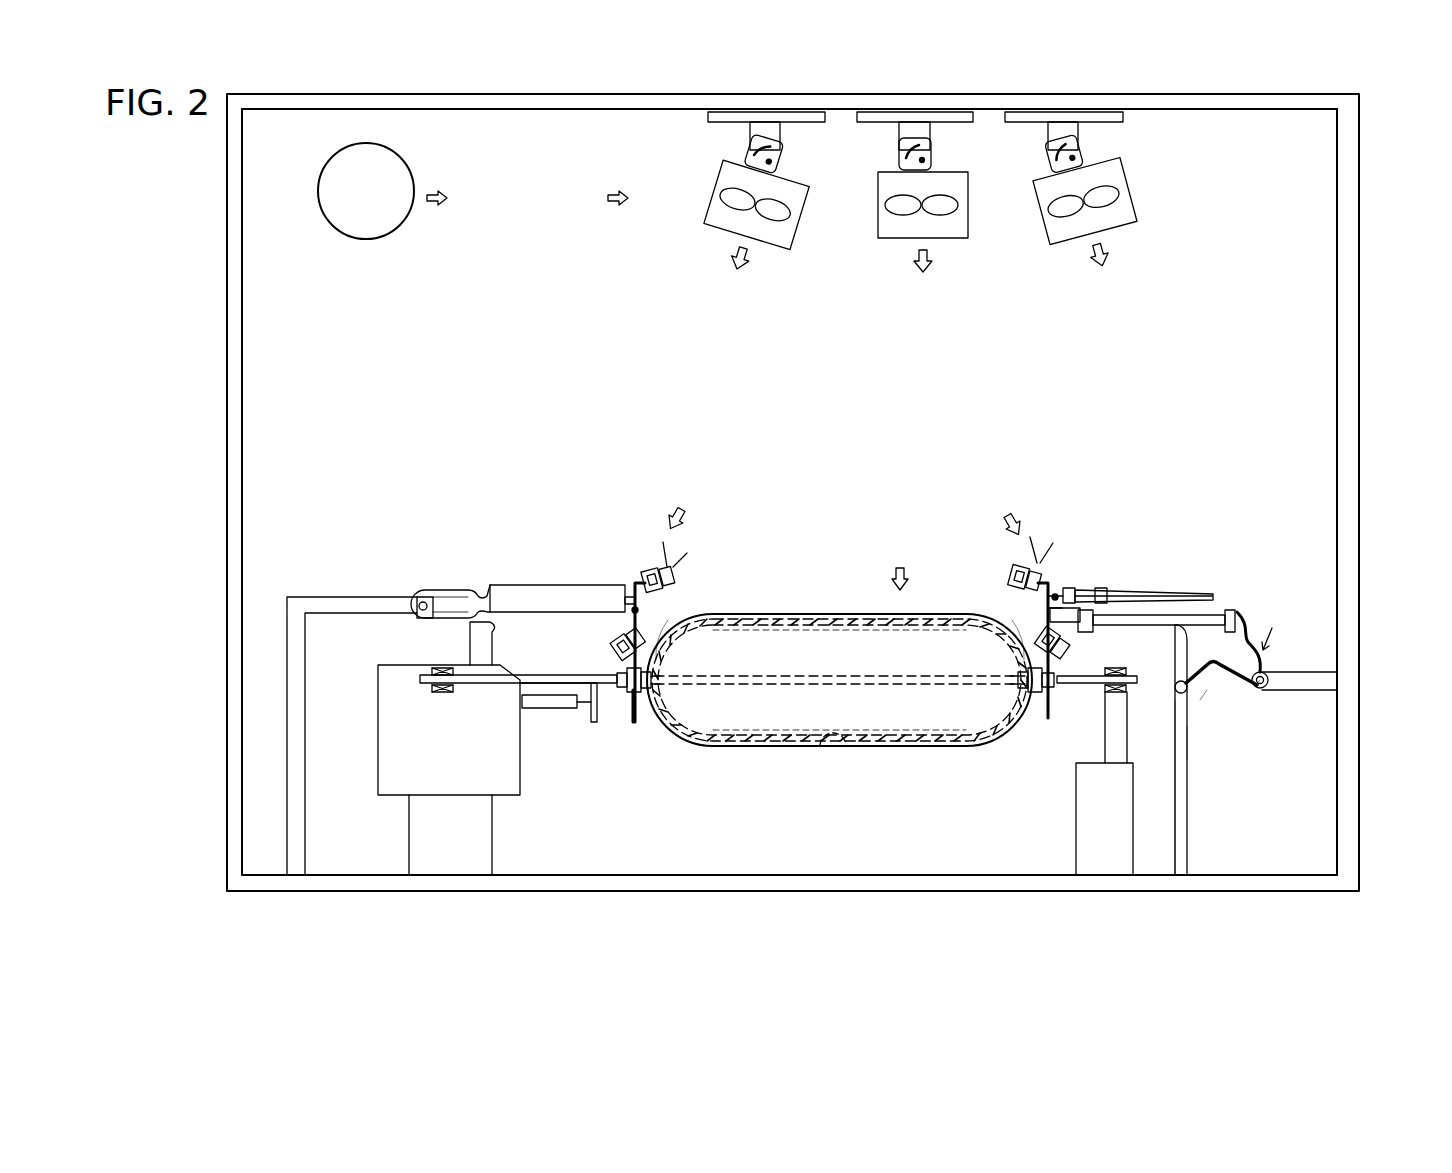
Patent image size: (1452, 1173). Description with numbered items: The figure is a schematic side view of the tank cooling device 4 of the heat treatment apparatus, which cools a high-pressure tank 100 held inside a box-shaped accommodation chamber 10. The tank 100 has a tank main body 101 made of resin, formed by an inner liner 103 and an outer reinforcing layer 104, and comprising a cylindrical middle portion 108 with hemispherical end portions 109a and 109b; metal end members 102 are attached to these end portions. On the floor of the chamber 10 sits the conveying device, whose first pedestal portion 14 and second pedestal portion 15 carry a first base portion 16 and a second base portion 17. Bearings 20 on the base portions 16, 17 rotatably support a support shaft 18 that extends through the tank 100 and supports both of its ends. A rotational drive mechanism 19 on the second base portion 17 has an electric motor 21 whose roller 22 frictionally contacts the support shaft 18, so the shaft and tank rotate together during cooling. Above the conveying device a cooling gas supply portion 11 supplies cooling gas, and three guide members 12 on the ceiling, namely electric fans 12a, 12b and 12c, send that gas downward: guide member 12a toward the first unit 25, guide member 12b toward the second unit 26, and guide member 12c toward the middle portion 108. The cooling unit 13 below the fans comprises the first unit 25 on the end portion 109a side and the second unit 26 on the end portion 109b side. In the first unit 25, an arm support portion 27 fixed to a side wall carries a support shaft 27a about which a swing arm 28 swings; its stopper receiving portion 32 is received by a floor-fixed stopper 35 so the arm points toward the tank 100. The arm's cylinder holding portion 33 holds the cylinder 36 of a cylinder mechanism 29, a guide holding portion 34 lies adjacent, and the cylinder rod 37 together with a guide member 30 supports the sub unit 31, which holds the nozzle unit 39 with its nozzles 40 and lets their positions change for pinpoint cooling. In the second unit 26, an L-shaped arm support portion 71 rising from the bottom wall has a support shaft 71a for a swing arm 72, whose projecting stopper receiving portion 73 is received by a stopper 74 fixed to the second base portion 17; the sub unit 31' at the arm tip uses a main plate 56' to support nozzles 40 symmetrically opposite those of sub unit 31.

The tank cooling device 4 is at (1320, 94).
The accommodation chamber 10 is at (1340, 147).
The cooling gas supply portion 11 is at (322, 172).
The guide members 12 is at (920, 268).
The guide member 12a is at (1020, 247).
The guide member 12b is at (800, 235).
The guide member 12c is at (950, 240).
The cooling unit 13 is at (1187, 632).
The first pedestal portion 14 is at (1133, 848).
The second pedestal portion 15 is at (493, 850).
The first base portion 16 is at (1175, 627).
The second base portion 17 is at (487, 690).
The support shaft 18 is at (550, 710).
The rotational drive mechanism 19 is at (594, 725).
The bearings 20 is at (443, 692).
The electric motor 21 is at (637, 722).
The roller 22 is at (598, 715).
The first unit 25 is at (1235, 705).
The second unit 26 is at (455, 641).
The arm support portion 27 is at (1262, 655).
The support shaft 27a is at (1272, 628).
The swing arm 28 is at (1275, 690).
The cylinder mechanism 29 is at (1230, 720).
The guide member 30 is at (1200, 615).
The sub unit 31 is at (1057, 589).
The sub unit 31' is at (633, 573).
The stopper receiving portion 32 is at (1205, 700).
The cylinder holding portion 33 is at (1107, 590).
The guide holding portion 34 is at (1077, 588).
The stopper 35 is at (1187, 825).
The cylinder 36 is at (1187, 727).
The cylinder rod 37 is at (1050, 720).
The nozzle unit 39 is at (667, 565).
The nozzles 40 is at (637, 580).
The main plate 56' is at (594, 631).
The arm support portion 71 is at (323, 598).
The support shaft 71a is at (417, 613).
The swing arm 72 is at (450, 592).
The stopper receiving portion 73 is at (487, 628).
The stopper 74 is at (490, 642).
The high-pressure tank 100 is at (866, 760).
The tank main body 101 is at (910, 750).
The end members 102 is at (992, 750).
The liner 103 is at (843, 740).
The reinforcing layer 104 is at (810, 750).
The middle portion 108 is at (800, 613).
The end portion 109a is at (1017, 617).
The end portion 109b is at (667, 617).